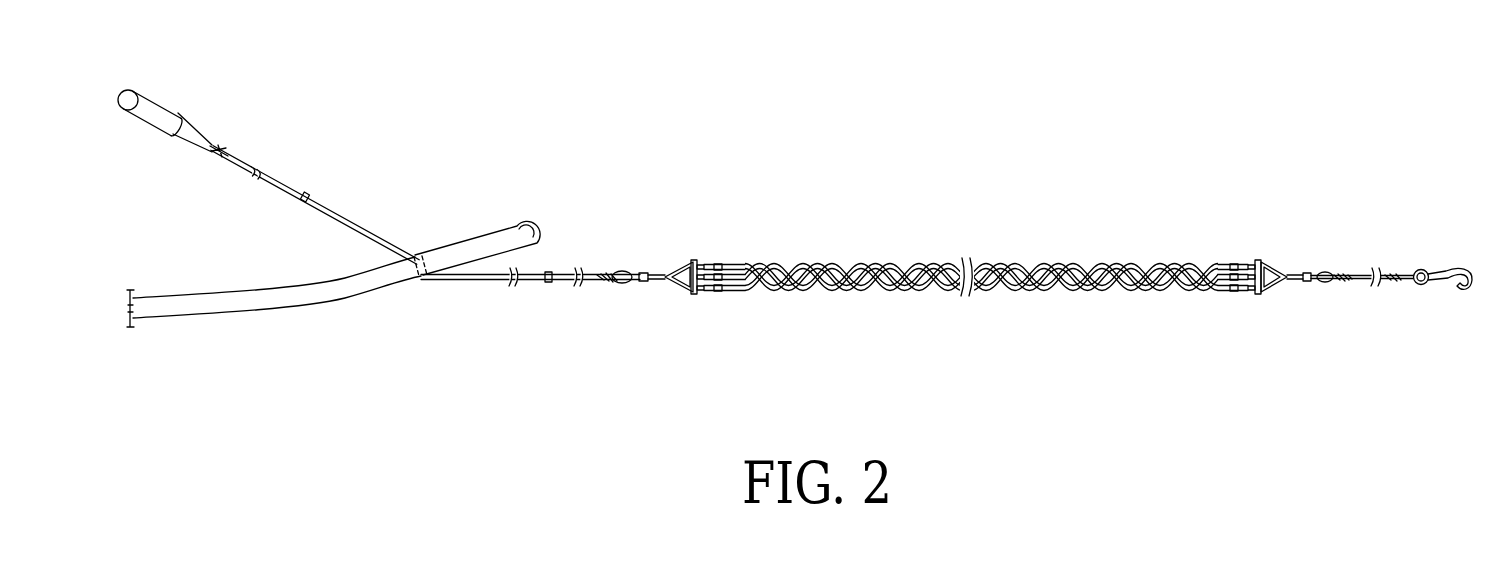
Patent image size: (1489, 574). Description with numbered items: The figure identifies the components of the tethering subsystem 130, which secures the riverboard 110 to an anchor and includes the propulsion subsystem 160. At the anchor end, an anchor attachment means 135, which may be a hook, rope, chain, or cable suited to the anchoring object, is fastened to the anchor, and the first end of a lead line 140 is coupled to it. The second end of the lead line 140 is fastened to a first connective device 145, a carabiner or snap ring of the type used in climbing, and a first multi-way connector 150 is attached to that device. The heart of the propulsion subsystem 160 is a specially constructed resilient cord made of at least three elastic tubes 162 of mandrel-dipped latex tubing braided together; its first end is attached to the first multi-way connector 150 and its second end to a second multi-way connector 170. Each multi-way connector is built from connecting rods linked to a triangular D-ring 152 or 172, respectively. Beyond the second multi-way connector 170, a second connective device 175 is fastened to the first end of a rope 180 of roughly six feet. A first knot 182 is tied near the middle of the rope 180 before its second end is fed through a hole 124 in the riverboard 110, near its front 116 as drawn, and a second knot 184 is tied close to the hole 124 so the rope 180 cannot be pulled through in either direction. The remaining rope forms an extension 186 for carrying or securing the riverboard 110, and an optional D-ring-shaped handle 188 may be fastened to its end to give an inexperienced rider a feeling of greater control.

The riverboard 110 is at (183, 318).
The front 116 is at (528, 228).
The hole 124 is at (427, 265).
The tethering subsystem 130 is at (1017, 68).
The anchor attachment means 135 is at (1452, 268).
The lead line 140 is at (1363, 284).
The first connective device 145 is at (1300, 272).
The first multi-way connector 150 is at (1252, 241).
The triangular D-ring 152 is at (1268, 293).
The propulsion subsystem 160 is at (935, 243).
The elastic tubes 162 is at (1003, 263).
The second multi-way connector 170 is at (713, 240).
The triangular D-ring 172 is at (683, 293).
The second connective device 175 is at (643, 284).
The rope 180 is at (562, 283).
The first knot 182 is at (549, 271).
The second knot 184 is at (300, 198).
The extension 186 is at (350, 217).
The handle 188 is at (143, 96).